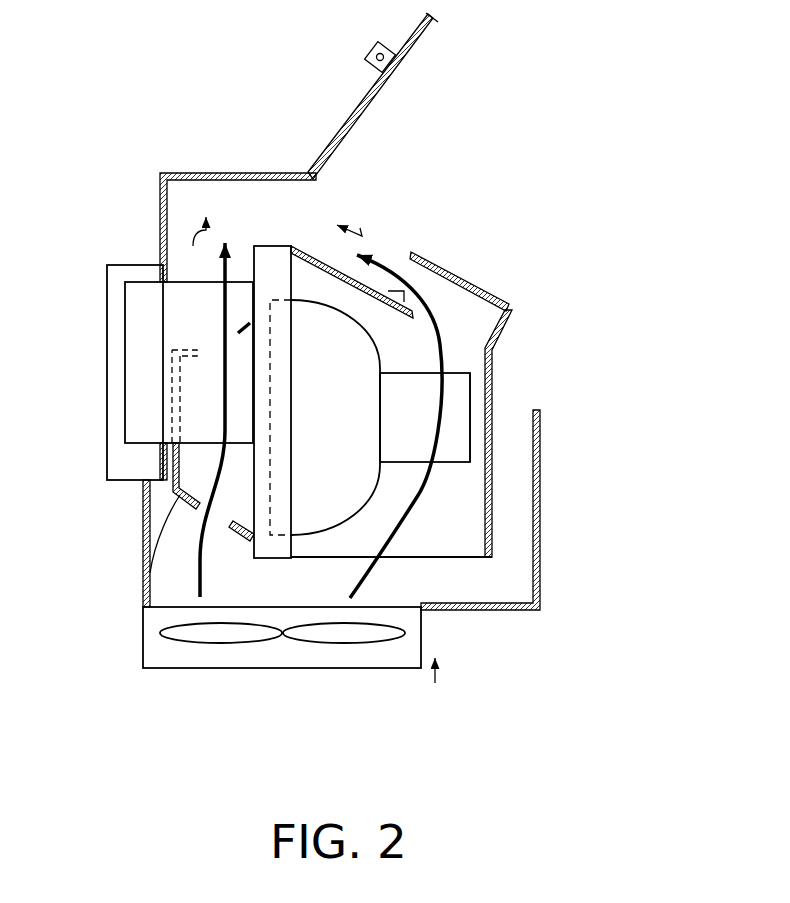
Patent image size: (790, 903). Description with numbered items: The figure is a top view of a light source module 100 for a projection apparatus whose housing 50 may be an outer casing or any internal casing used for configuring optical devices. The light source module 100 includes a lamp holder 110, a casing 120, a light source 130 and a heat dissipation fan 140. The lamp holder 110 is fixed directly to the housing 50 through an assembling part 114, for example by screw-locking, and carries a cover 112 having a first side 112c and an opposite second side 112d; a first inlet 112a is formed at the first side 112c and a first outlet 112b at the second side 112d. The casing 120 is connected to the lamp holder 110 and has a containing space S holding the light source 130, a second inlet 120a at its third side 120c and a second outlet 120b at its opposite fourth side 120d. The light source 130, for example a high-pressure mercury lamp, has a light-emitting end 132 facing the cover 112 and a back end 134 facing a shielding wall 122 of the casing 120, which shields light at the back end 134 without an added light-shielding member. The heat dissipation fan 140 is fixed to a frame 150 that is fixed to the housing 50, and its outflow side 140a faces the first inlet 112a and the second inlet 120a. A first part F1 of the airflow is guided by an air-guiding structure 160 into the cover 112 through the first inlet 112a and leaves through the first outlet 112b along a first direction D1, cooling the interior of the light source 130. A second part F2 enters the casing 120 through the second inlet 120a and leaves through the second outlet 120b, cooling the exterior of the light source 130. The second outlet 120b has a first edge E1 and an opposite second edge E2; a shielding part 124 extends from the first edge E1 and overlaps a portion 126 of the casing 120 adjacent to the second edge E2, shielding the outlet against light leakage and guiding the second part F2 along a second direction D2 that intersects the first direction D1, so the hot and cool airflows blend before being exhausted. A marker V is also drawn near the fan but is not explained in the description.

The light source module 100 is at (622, 372).
The lamp holder 110 is at (272, 252).
The cover 112 is at (203, 346).
The first inlet 112a is at (210, 510).
The first outlet 112b is at (205, 348).
The first side 112c is at (247, 540).
The second side 112d is at (243, 316).
The assembling part 114 is at (180, 295).
The casing 120 is at (457, 487).
The second inlet 120a is at (484, 555).
The second outlet 120b is at (447, 331).
The third side 120c is at (308, 558).
The fourth side 120d is at (314, 256).
The shielding wall 122 is at (470, 373).
The shielding part 124 is at (485, 346).
The portion of the casing 126 is at (388, 291).
The light source 130 is at (332, 512).
The light-emitting end 132 is at (269, 386).
The back end 134 is at (473, 448).
The heat dissipation fan 140 is at (180, 669).
The outflow side 140a is at (370, 603).
The frame 150 is at (141, 497).
The air-guiding structure 160 is at (167, 592).
The housing 50 is at (113, 273).
The first direction D1 is at (194, 246).
The second direction D2 is at (355, 212).
The first edge E1 is at (512, 305).
The second edge E2 is at (415, 313).
The first part of the heat dissipation airflow F1 is at (200, 567).
The second part of the heat dissipation airflow F2 is at (493, 370).
The containing space S is at (429, 503).
The vertical direction V is at (438, 672).